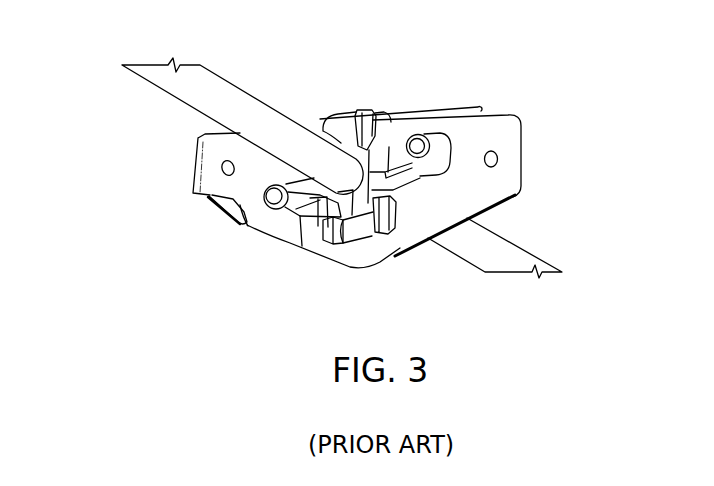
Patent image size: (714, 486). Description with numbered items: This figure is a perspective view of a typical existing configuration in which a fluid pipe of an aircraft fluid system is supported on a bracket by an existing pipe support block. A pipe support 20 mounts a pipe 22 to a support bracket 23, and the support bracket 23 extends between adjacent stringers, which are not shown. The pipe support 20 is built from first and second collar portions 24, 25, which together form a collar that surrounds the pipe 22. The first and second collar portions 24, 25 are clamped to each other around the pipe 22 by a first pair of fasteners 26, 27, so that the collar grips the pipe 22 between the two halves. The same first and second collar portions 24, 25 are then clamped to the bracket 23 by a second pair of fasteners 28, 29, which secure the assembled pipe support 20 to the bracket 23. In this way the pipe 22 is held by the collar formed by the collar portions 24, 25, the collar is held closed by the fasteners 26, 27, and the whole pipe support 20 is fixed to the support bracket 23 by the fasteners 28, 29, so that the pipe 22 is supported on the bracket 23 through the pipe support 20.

The pipe support 20 is at (297, 218).
The pipe 22 is at (493, 243).
The support bracket 23 is at (508, 142).
The first collar portion 24 is at (296, 217).
The second collar portion 25 is at (388, 153).
The fastener 26 is at (368, 114).
The fastener 27 is at (393, 222).
The fastener 28 is at (268, 196).
The fastener 29 is at (418, 139).